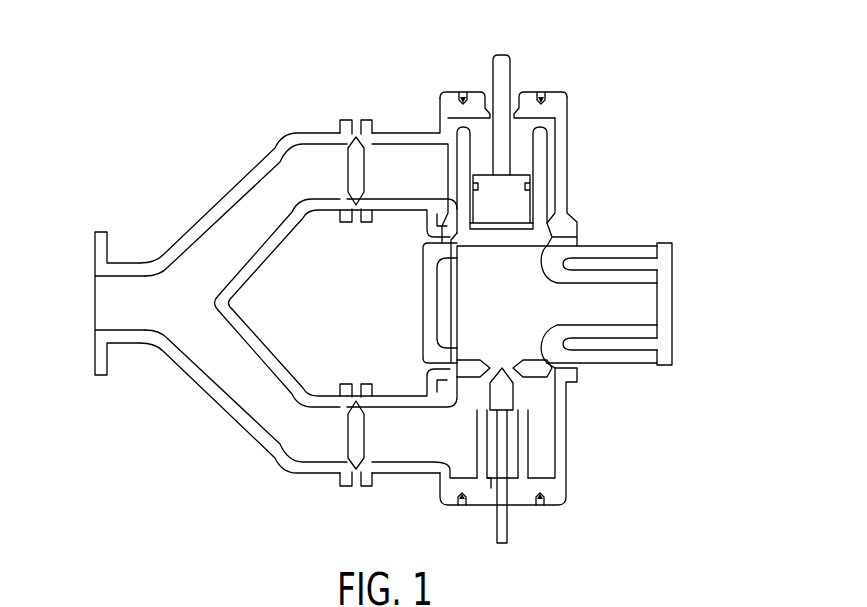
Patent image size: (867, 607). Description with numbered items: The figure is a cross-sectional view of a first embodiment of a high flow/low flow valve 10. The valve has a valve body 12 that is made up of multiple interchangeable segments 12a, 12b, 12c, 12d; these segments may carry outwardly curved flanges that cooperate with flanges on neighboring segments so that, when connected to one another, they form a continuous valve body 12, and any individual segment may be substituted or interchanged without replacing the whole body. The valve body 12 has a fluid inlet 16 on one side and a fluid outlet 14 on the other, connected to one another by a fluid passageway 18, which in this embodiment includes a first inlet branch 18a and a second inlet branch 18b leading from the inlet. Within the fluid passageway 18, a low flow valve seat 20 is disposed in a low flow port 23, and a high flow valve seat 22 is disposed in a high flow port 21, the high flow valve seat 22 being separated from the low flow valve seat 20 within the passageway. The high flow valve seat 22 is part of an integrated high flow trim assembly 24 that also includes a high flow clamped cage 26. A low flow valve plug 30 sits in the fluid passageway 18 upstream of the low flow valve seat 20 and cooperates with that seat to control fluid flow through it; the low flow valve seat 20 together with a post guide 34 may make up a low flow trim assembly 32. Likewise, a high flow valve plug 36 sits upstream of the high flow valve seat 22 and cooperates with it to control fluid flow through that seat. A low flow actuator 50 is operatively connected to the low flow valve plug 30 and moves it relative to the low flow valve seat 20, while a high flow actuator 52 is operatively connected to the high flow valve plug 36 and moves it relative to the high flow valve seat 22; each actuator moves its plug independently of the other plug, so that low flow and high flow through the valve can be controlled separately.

The high flow/low flow valve 10 is at (163, 111).
The valve body 12 is at (601, 78).
The interchangeable segment 12a is at (613, 278).
The interchangeable segment 12b is at (453, 97).
The interchangeable segment 12c is at (552, 485).
The interchangeable segment 12d is at (205, 385).
The fluid outlet 14 is at (657, 307).
The fluid inlet 16 is at (115, 298).
The fluid passageway 18 is at (489, 310).
The first inlet branch 18a is at (293, 157).
The second inlet branch 18b is at (287, 425).
The low flow valve seat 20 is at (550, 374).
The high flow port 21 is at (436, 255).
The high flow valve seat 22 is at (540, 232).
The low flow port 23 is at (436, 359).
The high flow trim assembly 24 is at (438, 214).
The high flow clamped cage 26 is at (462, 182).
The low flow valve plug 30 is at (505, 393).
The low flow trim assembly 32 is at (527, 492).
The post guide 34 is at (483, 447).
The high flow valve plug 36 is at (518, 197).
The low flow actuator 50 is at (498, 516).
The high flow actuator 52 is at (501, 72).